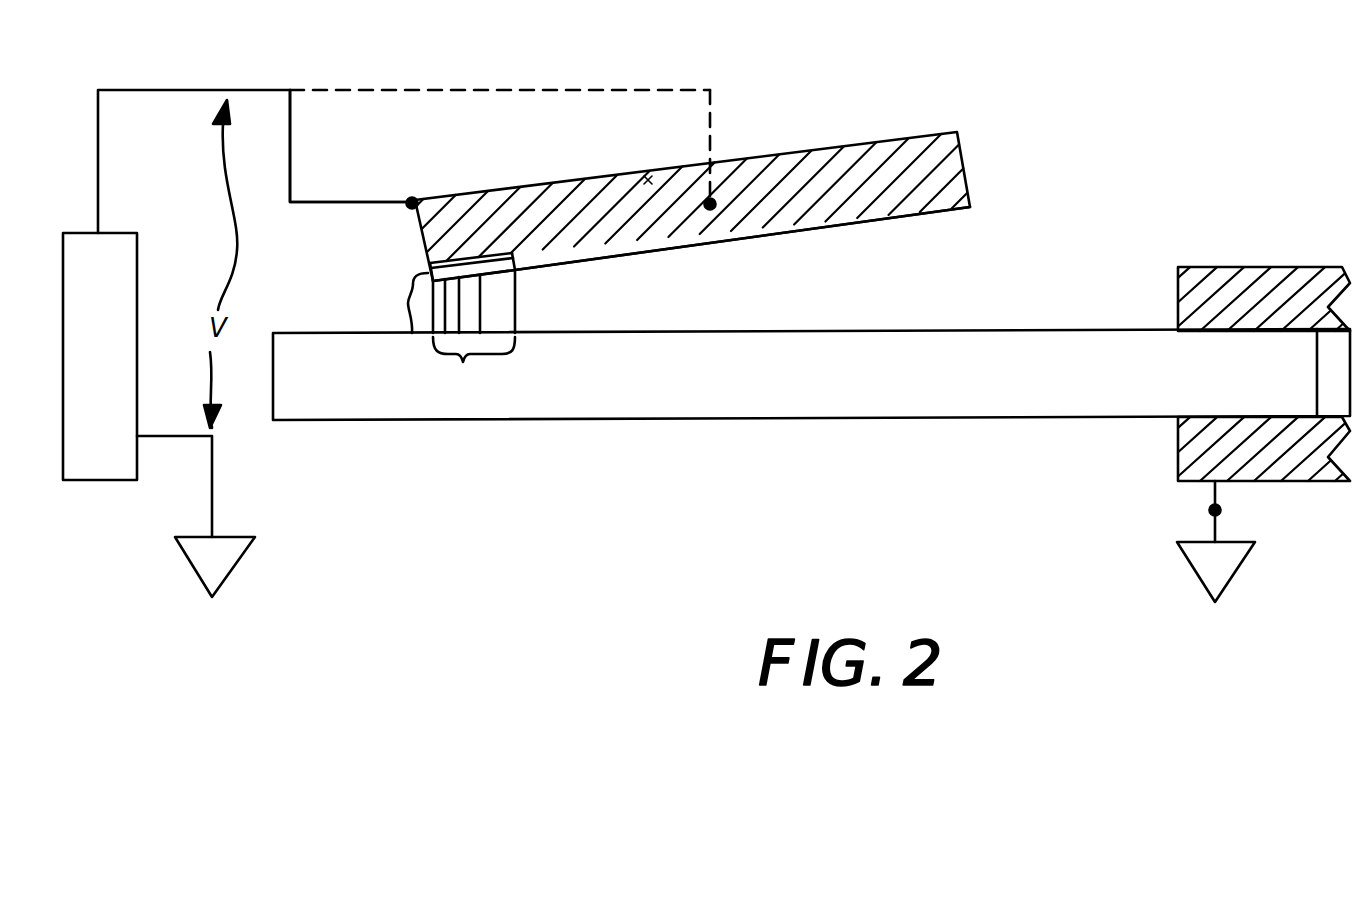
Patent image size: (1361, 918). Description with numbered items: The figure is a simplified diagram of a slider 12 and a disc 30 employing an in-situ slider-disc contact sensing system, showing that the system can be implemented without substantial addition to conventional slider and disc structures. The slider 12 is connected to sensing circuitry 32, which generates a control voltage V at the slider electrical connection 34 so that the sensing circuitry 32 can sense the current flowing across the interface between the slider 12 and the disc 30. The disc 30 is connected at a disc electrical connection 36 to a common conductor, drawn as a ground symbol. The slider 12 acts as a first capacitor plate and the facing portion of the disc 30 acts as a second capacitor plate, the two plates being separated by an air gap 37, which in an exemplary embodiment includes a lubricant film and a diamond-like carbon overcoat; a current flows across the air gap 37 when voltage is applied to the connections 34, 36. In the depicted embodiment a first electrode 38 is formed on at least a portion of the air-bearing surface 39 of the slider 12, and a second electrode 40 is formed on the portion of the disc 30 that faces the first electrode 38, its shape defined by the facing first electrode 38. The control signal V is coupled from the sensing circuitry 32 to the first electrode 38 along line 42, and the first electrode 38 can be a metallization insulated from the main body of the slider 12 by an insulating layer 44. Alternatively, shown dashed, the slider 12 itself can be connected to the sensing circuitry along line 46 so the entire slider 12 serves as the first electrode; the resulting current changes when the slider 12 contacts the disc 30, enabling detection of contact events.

The slider 12 is at (777, 185).
The disc 30 is at (668, 420).
The sensing circuitry 32 is at (122, 415).
The slider electrical connection 34 is at (630, 172).
The disc electrical connection 36 is at (1220, 508).
The air gap 37 is at (408, 303).
The first electrode 38 is at (493, 278).
The air-bearing surface 39 is at (737, 237).
The second electrode 40 is at (463, 362).
The line 42 is at (290, 122).
The insulating layer 44 is at (430, 268).
The line 46 is at (290, 90).